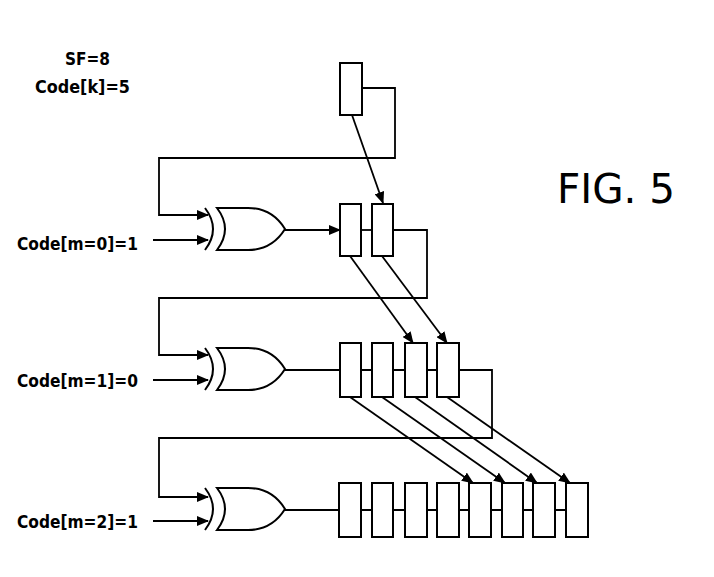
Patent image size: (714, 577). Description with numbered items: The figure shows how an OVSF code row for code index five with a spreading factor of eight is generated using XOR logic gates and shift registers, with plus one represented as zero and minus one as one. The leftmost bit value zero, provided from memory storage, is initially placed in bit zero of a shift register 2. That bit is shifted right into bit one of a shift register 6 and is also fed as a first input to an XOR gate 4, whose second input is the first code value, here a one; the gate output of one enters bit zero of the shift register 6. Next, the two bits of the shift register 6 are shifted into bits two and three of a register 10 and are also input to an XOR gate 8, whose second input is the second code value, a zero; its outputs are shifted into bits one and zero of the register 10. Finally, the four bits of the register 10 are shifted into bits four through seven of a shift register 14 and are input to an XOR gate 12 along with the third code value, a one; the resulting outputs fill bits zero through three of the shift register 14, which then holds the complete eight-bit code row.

The shift register 2 is at (355, 63).
The XOR gate 4 is at (237, 206).
The shift register 6 is at (388, 204).
The XOR gate 8 is at (237, 346).
The register 10 is at (452, 343).
The XOR gate 12 is at (237, 486).
The shift register 14 is at (580, 483).